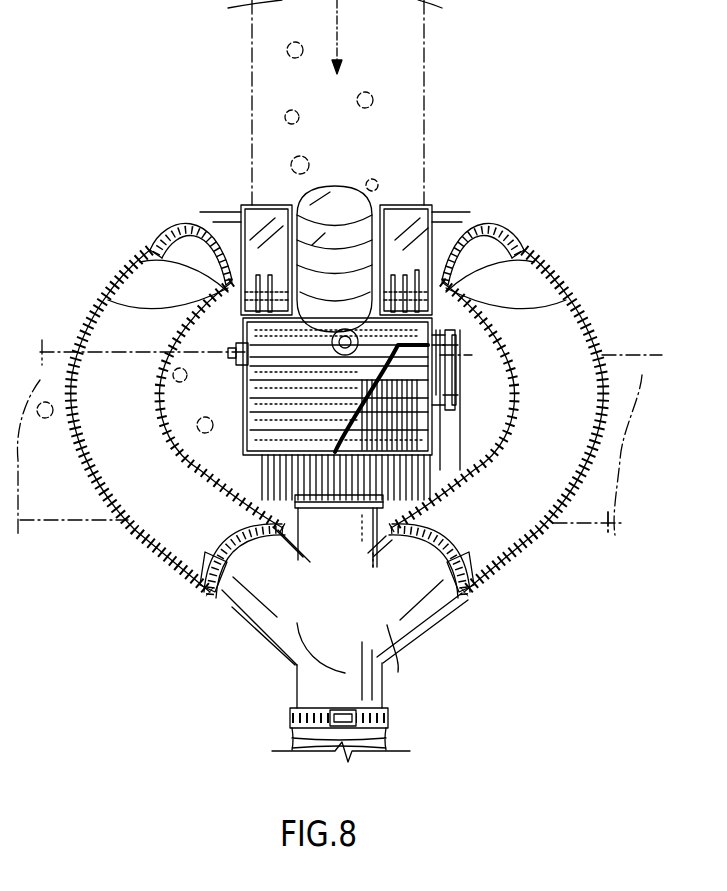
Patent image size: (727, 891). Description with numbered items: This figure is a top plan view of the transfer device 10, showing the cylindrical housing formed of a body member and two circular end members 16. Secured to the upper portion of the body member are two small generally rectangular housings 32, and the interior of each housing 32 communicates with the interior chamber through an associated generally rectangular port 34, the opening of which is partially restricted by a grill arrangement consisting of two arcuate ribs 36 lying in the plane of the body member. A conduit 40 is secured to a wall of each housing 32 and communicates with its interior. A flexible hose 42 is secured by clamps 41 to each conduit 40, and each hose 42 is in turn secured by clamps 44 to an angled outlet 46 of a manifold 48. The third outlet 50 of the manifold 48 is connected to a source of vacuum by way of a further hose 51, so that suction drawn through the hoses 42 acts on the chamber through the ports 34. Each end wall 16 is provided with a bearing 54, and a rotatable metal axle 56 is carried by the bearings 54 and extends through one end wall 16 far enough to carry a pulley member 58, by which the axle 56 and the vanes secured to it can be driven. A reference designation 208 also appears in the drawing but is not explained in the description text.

The transfer device 10 is at (440, 183).
The circular end member 16 is at (245, 390).
The rectangular housing 32 is at (115, 302).
The rectangular port 34 is at (196, 220).
The arcuate rib 36 is at (180, 280).
The conduit 40 is at (232, 222).
The clamp 41 is at (152, 250).
The flexible hose 42 is at (113, 423).
The clamp 44 is at (210, 594).
The angled outlet 46 is at (392, 672).
The manifold 48 is at (292, 662).
The third outlet 50 is at (345, 696).
The further hose 51 is at (367, 740).
The bearing 54 is at (238, 350).
The rotatable metal axle 56 is at (505, 318).
The pulley member 58 is at (570, 345).
The reference plane 208 is at (603, 512).